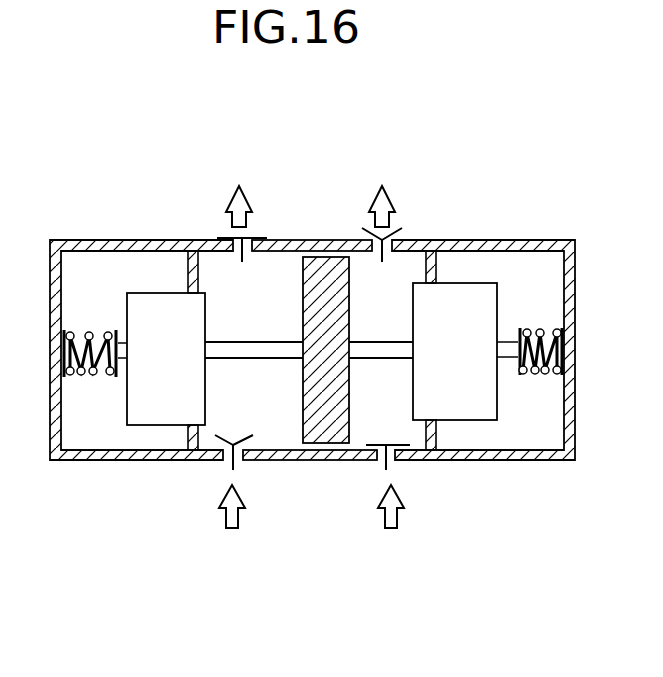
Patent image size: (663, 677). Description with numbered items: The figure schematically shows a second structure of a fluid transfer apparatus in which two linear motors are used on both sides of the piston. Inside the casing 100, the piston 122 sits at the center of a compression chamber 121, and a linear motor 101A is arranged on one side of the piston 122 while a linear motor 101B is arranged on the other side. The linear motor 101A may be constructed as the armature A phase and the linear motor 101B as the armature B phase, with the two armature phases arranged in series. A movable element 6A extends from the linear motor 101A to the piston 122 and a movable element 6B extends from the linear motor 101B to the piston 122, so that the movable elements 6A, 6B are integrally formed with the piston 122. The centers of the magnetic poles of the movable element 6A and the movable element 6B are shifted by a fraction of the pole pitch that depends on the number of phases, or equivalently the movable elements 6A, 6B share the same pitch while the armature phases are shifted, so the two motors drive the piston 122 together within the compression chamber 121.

The casing 100 is at (466, 240).
The compression chamber 121 is at (272, 292).
The piston 122 is at (330, 290).
The linear motor 101A is at (163, 390).
The linear motor 101B is at (455, 390).
The movable element 6A is at (275, 352).
The movable element 6B is at (360, 352).